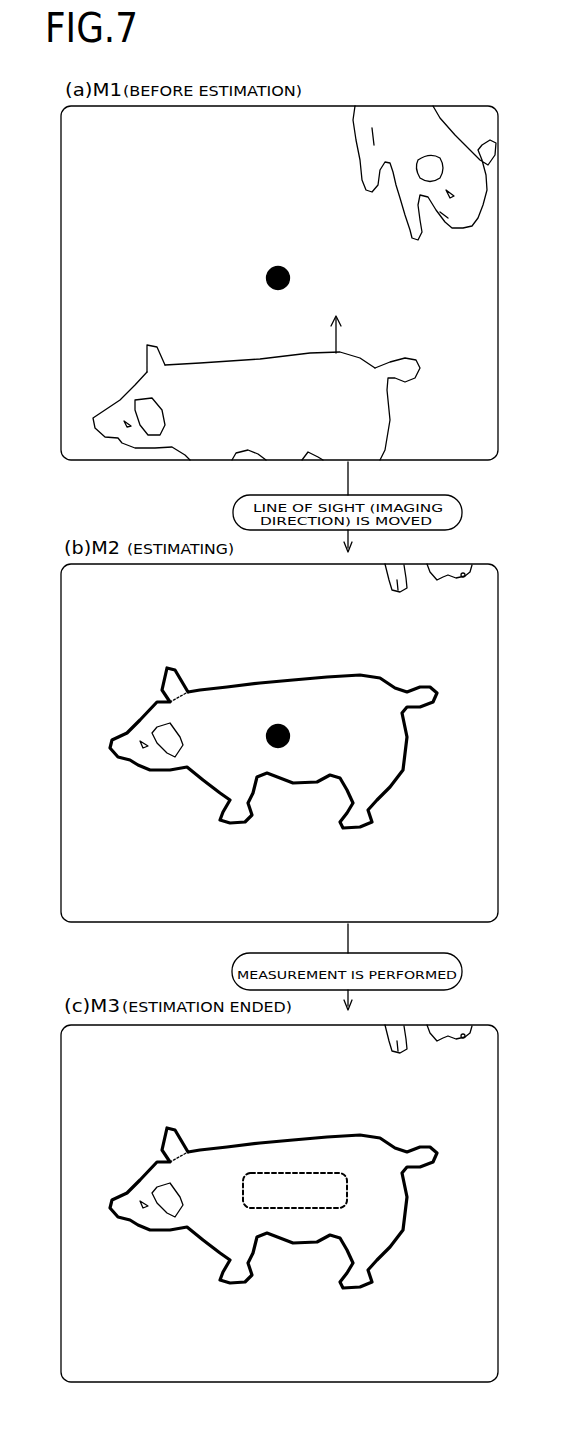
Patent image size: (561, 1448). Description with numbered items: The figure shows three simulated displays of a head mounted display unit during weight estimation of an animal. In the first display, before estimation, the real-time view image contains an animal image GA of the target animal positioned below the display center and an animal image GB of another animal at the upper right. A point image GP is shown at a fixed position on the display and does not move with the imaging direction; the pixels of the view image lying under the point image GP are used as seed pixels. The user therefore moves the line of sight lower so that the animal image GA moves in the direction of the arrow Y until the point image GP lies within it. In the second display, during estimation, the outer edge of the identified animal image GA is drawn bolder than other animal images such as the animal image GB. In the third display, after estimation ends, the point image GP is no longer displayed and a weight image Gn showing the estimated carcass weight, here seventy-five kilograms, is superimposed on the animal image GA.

The animal image GA is at (213, 362).
The animal image GB is at (355, 135).
The point image GP is at (285, 268).
The arrow Y is at (343, 334).
The weight image Gn is at (348, 1187).